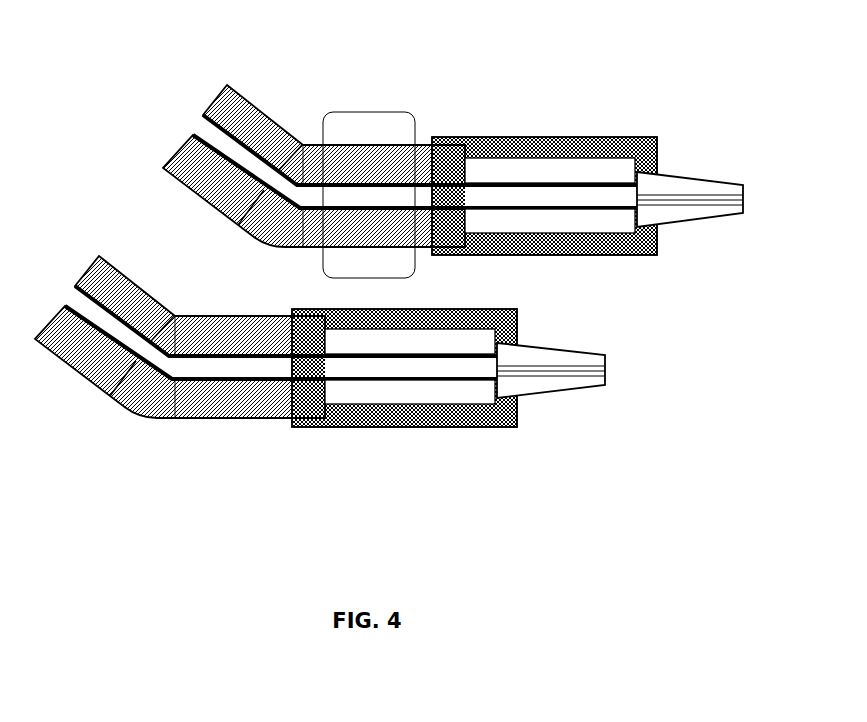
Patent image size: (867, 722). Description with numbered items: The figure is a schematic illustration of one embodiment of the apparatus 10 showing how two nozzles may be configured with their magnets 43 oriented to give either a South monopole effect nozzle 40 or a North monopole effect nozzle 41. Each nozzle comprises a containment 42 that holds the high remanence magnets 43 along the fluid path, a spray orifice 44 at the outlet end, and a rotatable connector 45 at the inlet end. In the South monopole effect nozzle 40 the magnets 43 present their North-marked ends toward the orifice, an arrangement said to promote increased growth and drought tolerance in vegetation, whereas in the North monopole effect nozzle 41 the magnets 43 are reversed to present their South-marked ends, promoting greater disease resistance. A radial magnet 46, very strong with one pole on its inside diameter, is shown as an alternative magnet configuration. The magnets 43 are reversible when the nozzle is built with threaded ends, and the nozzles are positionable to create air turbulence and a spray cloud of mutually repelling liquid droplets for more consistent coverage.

The apparatus 10 is at (408, 240).
The South monopole effect nozzle 40 is at (658, 151).
The North monopole effect nozzle 41 is at (517, 323).
The containment 42 is at (500, 152).
The magnets 43 is at (547, 167).
The spray orifice 44 is at (693, 188).
The rotatable connector 45 is at (192, 170).
The radial magnet 46 is at (396, 127).